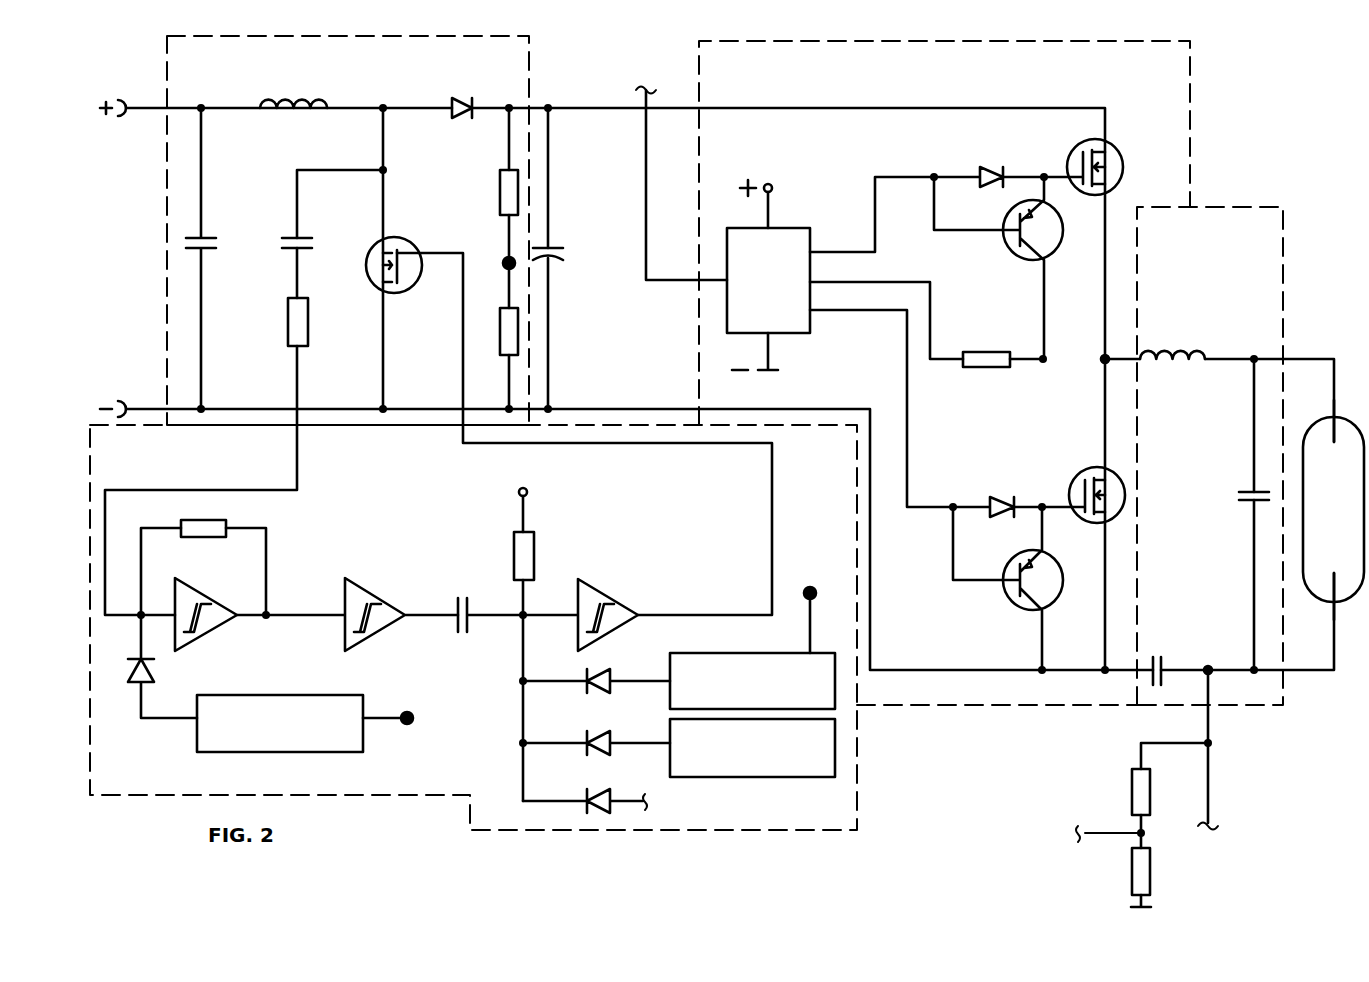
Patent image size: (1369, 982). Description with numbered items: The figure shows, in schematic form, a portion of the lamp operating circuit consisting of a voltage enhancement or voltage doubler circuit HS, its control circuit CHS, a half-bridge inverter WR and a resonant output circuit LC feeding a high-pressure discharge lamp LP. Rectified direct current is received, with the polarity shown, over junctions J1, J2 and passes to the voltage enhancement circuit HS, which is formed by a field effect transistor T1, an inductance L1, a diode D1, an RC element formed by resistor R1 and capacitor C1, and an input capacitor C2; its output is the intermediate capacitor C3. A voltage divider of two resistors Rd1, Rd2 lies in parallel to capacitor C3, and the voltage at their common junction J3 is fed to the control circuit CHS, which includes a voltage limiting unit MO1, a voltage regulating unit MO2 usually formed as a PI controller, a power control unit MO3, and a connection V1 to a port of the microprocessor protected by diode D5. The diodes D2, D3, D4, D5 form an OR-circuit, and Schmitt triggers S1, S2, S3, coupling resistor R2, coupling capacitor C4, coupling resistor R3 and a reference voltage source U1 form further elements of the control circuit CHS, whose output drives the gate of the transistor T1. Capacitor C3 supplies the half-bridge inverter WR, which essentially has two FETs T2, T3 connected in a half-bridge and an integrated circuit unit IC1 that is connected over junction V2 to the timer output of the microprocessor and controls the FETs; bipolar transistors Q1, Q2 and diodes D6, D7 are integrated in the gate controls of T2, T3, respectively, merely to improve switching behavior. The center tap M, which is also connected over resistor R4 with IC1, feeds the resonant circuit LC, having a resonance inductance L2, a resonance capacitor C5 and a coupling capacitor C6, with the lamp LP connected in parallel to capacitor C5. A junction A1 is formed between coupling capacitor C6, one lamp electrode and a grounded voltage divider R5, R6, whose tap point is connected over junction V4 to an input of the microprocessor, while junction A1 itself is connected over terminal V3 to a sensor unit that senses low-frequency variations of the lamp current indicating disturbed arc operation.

The voltage enhancement circuit HS is at (385, 70).
The half-bridge inverter WR is at (972, 74).
The resonant circuit LC is at (1223, 242).
The control circuit CHS is at (400, 534).
The junction J1 is at (116, 90).
The junction J2 is at (114, 393).
The common junction J3 is at (590, 491).
The inductance L1 is at (293, 89).
The diode D1 is at (462, 93).
The input capacitor C2 is at (211, 258).
The capacitor C1 is at (308, 230).
The resistor R1 is at (315, 322).
The field effect transistor T1 is at (398, 253).
The resistor Rd1 is at (485, 192).
The resistor Rd2 is at (487, 346).
The intermediate capacitor C3 is at (562, 239).
The junction V2 is at (644, 75).
The integrated circuit unit IC1 is at (885, 342).
The diode D6 is at (989, 162).
The bi-polar transistor Q1 is at (1010, 268).
The field effect transistor T2 is at (1101, 167).
The resistor R4 is at (986, 346).
The center tap M is at (1115, 347).
The diode D7 is at (997, 492).
The field effect transistor T3 is at (1100, 495).
The bi-polar transistor Q2 is at (1018, 588).
The resonance inductance L2 is at (1172, 341).
The resonance capacitor C5 is at (1242, 495).
The high-pressure discharge lamp LP is at (1316, 510).
The coupling capacitor C6 is at (1139, 662).
The junction A1 is at (1210, 656).
The resistor R5 is at (1170, 795).
The resistor R6 is at (1157, 877).
The terminal V3 is at (1208, 845).
The junction V4 is at (1088, 834).
The coupling resistor R2 is at (203, 555).
The Schmitt trigger S1 is at (206, 609).
The Schmitt trigger S2 is at (347, 609).
The Schmitt trigger S3 is at (580, 609).
The coupling capacitor C4 is at (490, 610).
The diode D2 is at (162, 666).
The voltage limiting unit MO1 is at (280, 723).
The voltage regulating unit MO2 is at (752, 681).
The power control unit MO3 is at (752, 748).
The reference voltage source U1 is at (542, 506).
The coupling resistor R3 is at (541, 666).
The diode D3 is at (596, 671).
The diode D4 is at (596, 733).
The diode D5 is at (583, 791).
The connection V1 is at (662, 805).